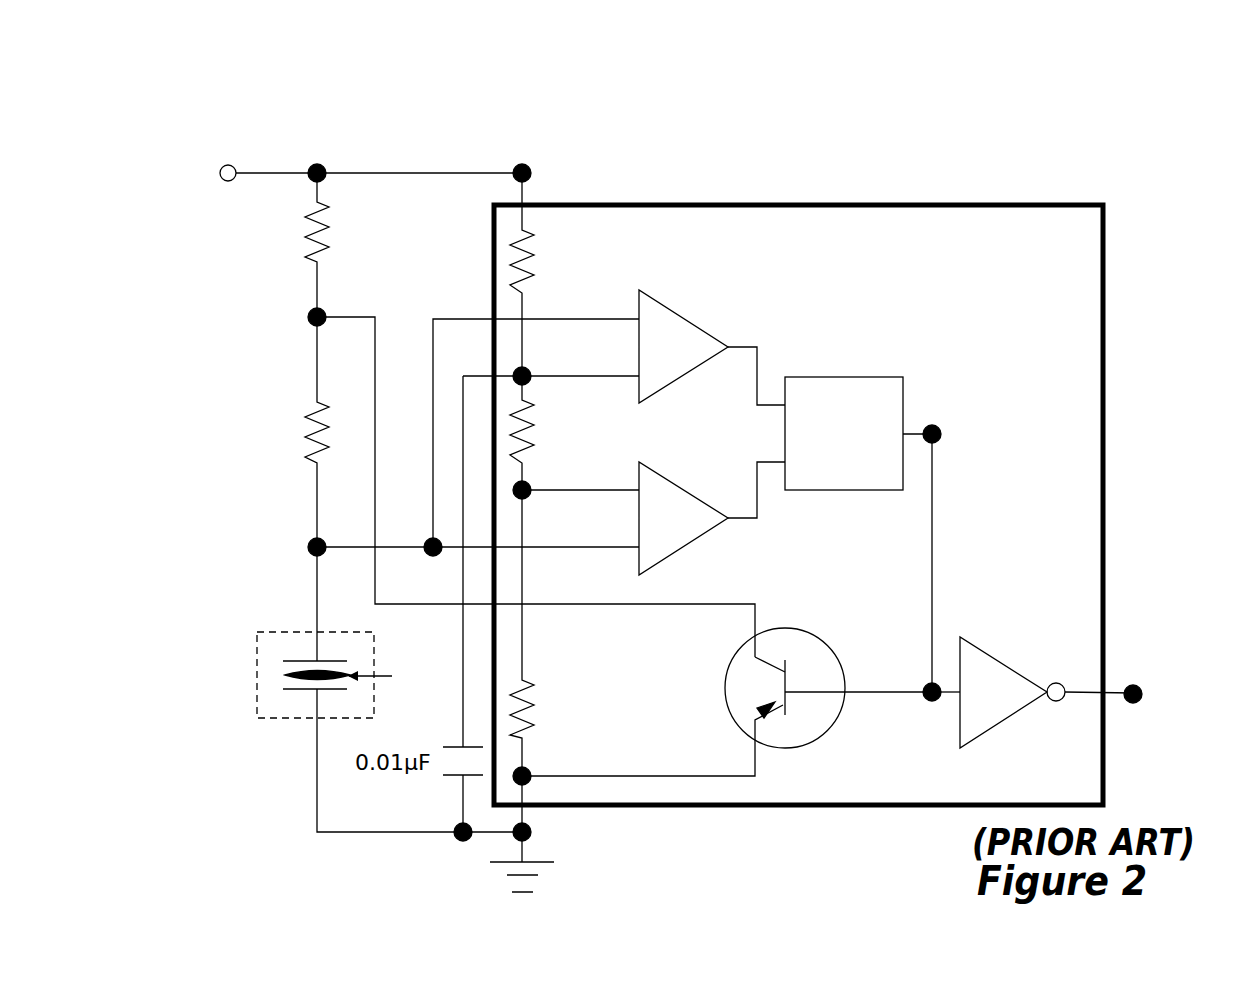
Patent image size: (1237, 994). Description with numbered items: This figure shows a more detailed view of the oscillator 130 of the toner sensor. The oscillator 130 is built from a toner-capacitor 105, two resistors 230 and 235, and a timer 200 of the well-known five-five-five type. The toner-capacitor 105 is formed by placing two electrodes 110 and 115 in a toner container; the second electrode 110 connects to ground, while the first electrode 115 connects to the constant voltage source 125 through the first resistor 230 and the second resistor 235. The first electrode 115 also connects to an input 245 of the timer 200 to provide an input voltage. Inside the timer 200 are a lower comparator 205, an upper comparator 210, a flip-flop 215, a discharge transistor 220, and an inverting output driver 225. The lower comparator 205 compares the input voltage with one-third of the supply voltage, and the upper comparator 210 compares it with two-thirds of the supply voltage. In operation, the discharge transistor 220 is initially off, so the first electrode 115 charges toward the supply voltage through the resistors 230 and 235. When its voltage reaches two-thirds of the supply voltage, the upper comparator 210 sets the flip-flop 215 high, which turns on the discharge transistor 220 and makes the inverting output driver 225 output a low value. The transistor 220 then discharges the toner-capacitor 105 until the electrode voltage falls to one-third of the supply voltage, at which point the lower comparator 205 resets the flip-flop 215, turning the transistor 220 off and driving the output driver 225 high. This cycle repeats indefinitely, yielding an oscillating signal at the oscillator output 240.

The toner-capacitor 105 is at (285, 723).
The second electrode 110 is at (284, 689).
The first electrode 115 is at (284, 660).
The constant voltage source 125 is at (204, 173).
The oscillator 130 is at (903, 118).
The 555-timer 200 is at (1107, 292).
The lower comparator 205 is at (712, 518).
The upper comparator 210 is at (712, 347).
The flip-flop 215 is at (863, 539).
The discharge transistor 220 is at (727, 702).
The inverting output driver 225 is at (998, 692).
The resistor R1 230 is at (312, 245).
The resistor RT 235 is at (311, 432).
The oscillator output 240 is at (1113, 681).
The input of the 555-timer 245 is at (425, 537).